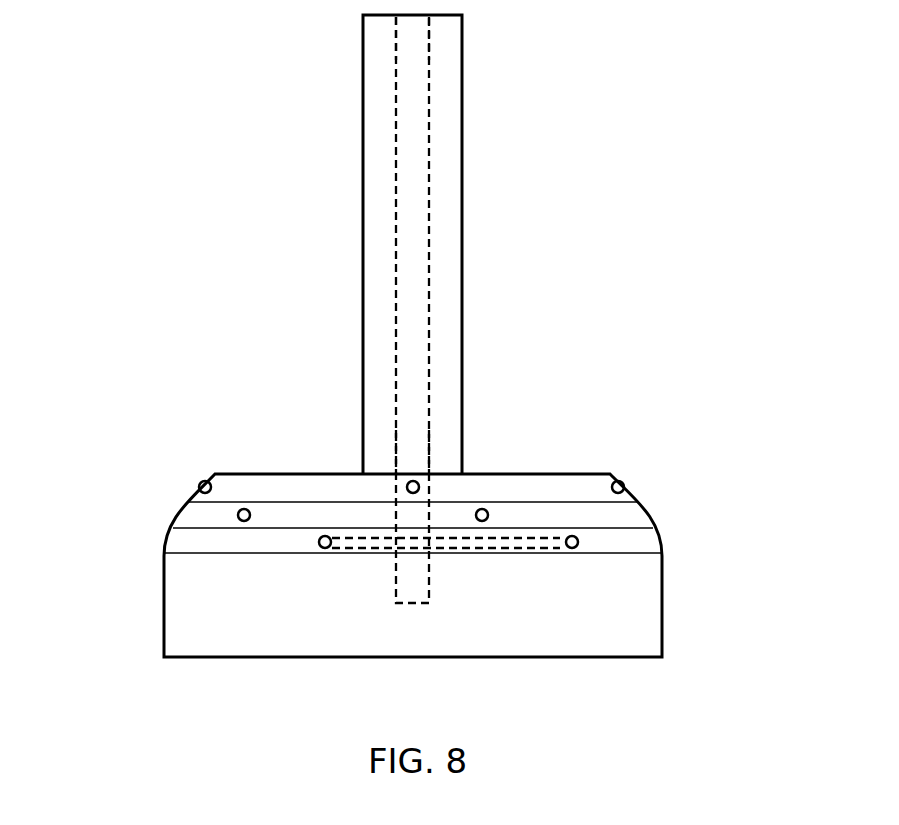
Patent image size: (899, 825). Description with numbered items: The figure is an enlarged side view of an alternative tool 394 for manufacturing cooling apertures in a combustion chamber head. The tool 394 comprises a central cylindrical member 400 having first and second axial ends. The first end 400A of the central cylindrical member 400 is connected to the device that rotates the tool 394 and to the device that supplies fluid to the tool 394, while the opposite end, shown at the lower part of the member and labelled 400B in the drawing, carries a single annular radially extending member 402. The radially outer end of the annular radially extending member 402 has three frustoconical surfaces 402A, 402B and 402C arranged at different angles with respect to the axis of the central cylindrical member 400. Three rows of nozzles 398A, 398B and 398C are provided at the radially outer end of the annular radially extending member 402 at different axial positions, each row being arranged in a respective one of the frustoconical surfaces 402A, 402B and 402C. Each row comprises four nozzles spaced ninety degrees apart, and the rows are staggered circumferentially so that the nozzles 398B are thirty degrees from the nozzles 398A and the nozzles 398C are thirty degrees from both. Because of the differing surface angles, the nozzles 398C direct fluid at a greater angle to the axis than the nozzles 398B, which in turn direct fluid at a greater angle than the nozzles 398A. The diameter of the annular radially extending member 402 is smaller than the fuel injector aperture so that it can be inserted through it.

The tool 394 is at (462, 87).
The central cylindrical member 400 is at (445, 222).
The first end of the central cylindrical member 400A is at (373, 47).
The lower end of channel 400B is at (378, 443).
The annular radially extending member 402 is at (655, 588).
The frustoconical surface 402A is at (607, 495).
The frustoconical surface 402B is at (640, 516).
The frustoconical surface 402C is at (655, 539).
The row of nozzles 398A is at (202, 483).
The row of nozzles 398B is at (475, 515).
The row of nozzles 398C is at (572, 548).